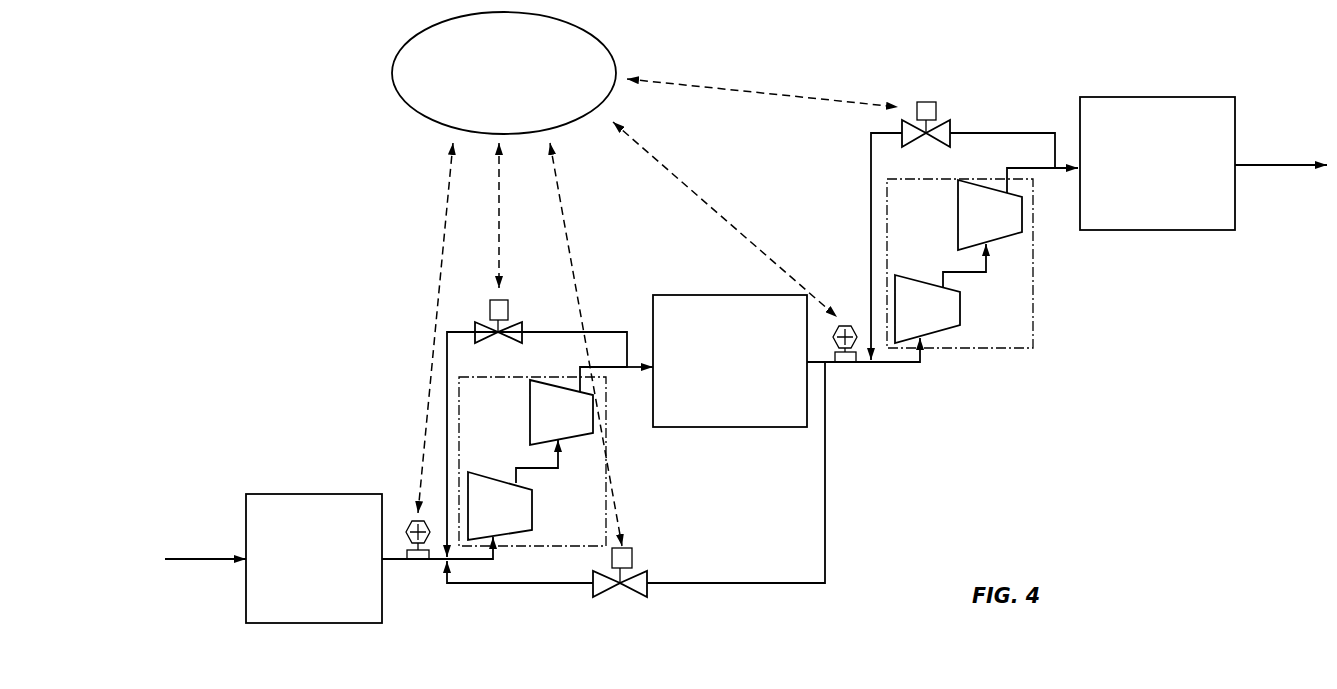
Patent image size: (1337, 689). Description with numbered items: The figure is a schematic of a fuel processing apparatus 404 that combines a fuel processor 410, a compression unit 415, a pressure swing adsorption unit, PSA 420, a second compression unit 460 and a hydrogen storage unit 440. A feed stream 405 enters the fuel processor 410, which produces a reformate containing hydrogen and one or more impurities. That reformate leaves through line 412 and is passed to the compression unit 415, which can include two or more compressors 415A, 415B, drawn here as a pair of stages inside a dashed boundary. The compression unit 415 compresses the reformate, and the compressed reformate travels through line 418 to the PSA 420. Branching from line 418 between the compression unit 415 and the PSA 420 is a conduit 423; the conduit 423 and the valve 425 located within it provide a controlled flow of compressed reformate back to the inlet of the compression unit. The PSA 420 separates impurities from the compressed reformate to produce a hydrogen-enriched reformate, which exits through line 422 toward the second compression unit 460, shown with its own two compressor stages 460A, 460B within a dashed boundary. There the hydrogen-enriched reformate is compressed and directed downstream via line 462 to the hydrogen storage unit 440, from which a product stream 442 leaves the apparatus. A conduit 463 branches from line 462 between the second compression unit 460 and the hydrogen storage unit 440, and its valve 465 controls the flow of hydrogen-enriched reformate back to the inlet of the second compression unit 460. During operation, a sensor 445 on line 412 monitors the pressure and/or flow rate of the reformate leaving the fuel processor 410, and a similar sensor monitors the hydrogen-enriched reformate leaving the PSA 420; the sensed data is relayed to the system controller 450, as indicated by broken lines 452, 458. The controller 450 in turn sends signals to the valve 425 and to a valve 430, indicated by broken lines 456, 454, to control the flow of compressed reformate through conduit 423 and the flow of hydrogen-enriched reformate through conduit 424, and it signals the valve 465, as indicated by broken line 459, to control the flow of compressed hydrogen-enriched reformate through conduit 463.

The fuel processing apparatus 404 is at (248, 80).
The feed stream 405 is at (148, 571).
The fuel processor 410 is at (293, 572).
The line 412 is at (392, 562).
The compression unit 415 is at (532, 476).
The compressor 415A is at (475, 520).
The compressor 415B is at (537, 425).
The line 418 is at (630, 372).
The PSA 420 is at (710, 375).
The line 422 is at (815, 365).
The conduit 423 is at (603, 330).
The conduit 424 is at (752, 586).
The valve 425 is at (515, 325).
The valve 430 is at (625, 590).
The hydrogen storage unit 440 is at (1138, 177).
The product stream 442 is at (1285, 165).
The sensor 445 is at (427, 543).
The system controller 450 is at (484, 85).
The broken line 452 is at (445, 225).
The broken line 454 is at (565, 227).
The broken line 456 is at (500, 172).
The broken line 458 is at (738, 230).
The broken line 459 is at (733, 88).
The second compression unit 460 is at (992, 263).
The first compressor stage 460A is at (903, 323).
The second compressor stage 460B is at (967, 228).
The line 462 is at (1060, 172).
The conduit 463 is at (1033, 132).
The valve 465 is at (940, 128).